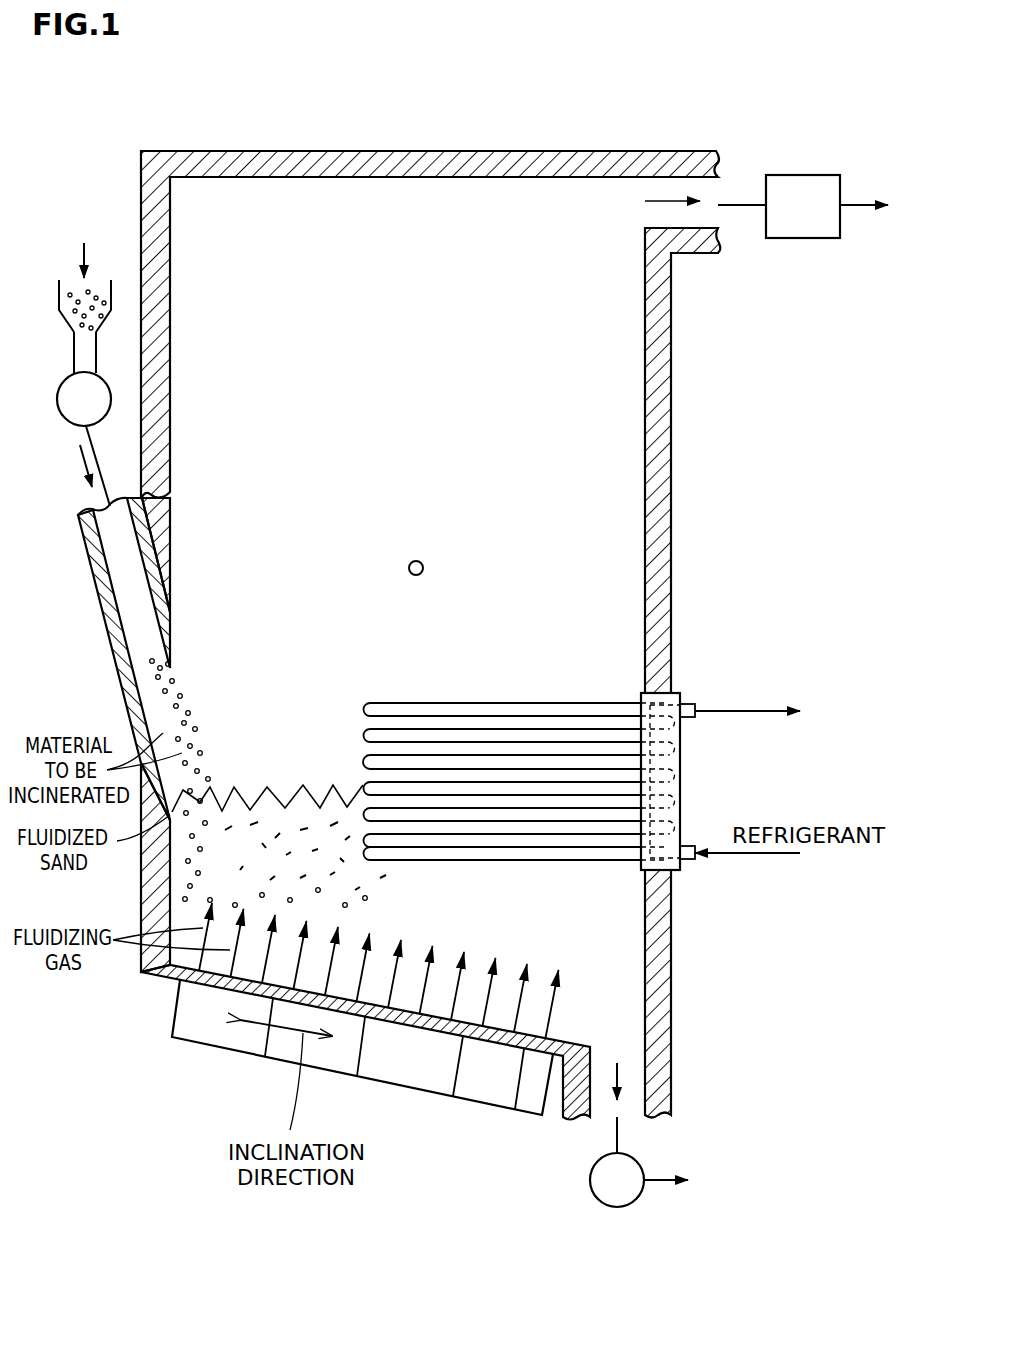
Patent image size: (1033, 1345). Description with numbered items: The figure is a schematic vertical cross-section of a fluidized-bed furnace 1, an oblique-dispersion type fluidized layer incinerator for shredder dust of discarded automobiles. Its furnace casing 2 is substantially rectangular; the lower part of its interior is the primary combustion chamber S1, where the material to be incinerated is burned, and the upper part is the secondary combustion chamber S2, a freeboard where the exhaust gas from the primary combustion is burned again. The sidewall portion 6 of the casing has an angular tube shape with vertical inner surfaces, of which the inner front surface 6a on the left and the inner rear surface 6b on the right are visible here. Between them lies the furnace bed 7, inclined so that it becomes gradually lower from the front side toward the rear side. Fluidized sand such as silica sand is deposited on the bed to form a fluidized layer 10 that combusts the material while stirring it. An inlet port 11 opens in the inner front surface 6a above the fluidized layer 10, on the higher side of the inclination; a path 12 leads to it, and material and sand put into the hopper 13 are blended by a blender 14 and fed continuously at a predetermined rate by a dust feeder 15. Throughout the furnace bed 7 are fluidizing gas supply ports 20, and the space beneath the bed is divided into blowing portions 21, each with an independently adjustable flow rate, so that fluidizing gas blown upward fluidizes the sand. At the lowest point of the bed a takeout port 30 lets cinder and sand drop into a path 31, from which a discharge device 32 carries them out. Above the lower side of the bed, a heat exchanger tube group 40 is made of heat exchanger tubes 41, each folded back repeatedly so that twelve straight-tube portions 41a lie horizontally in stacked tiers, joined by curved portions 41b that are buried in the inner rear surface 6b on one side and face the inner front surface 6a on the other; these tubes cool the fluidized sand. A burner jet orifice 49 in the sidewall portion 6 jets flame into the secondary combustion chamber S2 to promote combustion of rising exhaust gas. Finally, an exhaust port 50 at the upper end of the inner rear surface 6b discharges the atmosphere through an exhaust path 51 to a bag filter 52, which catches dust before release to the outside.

The fluidized-bed furnace 1 is at (496, 108).
The furnace casing 2 is at (410, 140).
The sidewall portion 6 is at (675, 479).
The inner front surface 6a is at (176, 392).
The inner rear surface 6b is at (652, 522).
The furnace bed 7 is at (240, 995).
The fluidized layer 10 is at (608, 937).
The inlet port 11 is at (178, 714).
The path 12 is at (104, 577).
The hopper 13 is at (58, 289).
The blender 14 is at (74, 360).
The dust feeder 15 is at (108, 380).
The fluidizing gas supply port 20 is at (180, 981).
The blowing portion 21 is at (257, 1056).
The takeout port 30 is at (645, 1066).
The path 31 is at (617, 1137).
The discharge device 32 is at (640, 1163).
The heat exchanger tube group 40 is at (500, 678).
The heat exchanger tube 41 is at (391, 700).
The straight-tube portion 41a is at (542, 737).
The curved portion 41b is at (363, 763).
The jet orifice 49 is at (418, 561).
The exhaust port 50 is at (648, 175).
The exhaust path 51 is at (745, 205).
The bag filter 52 is at (806, 175).
The primary combustion chamber S1 is at (290, 692).
The secondary combustion chamber S2 is at (245, 225).